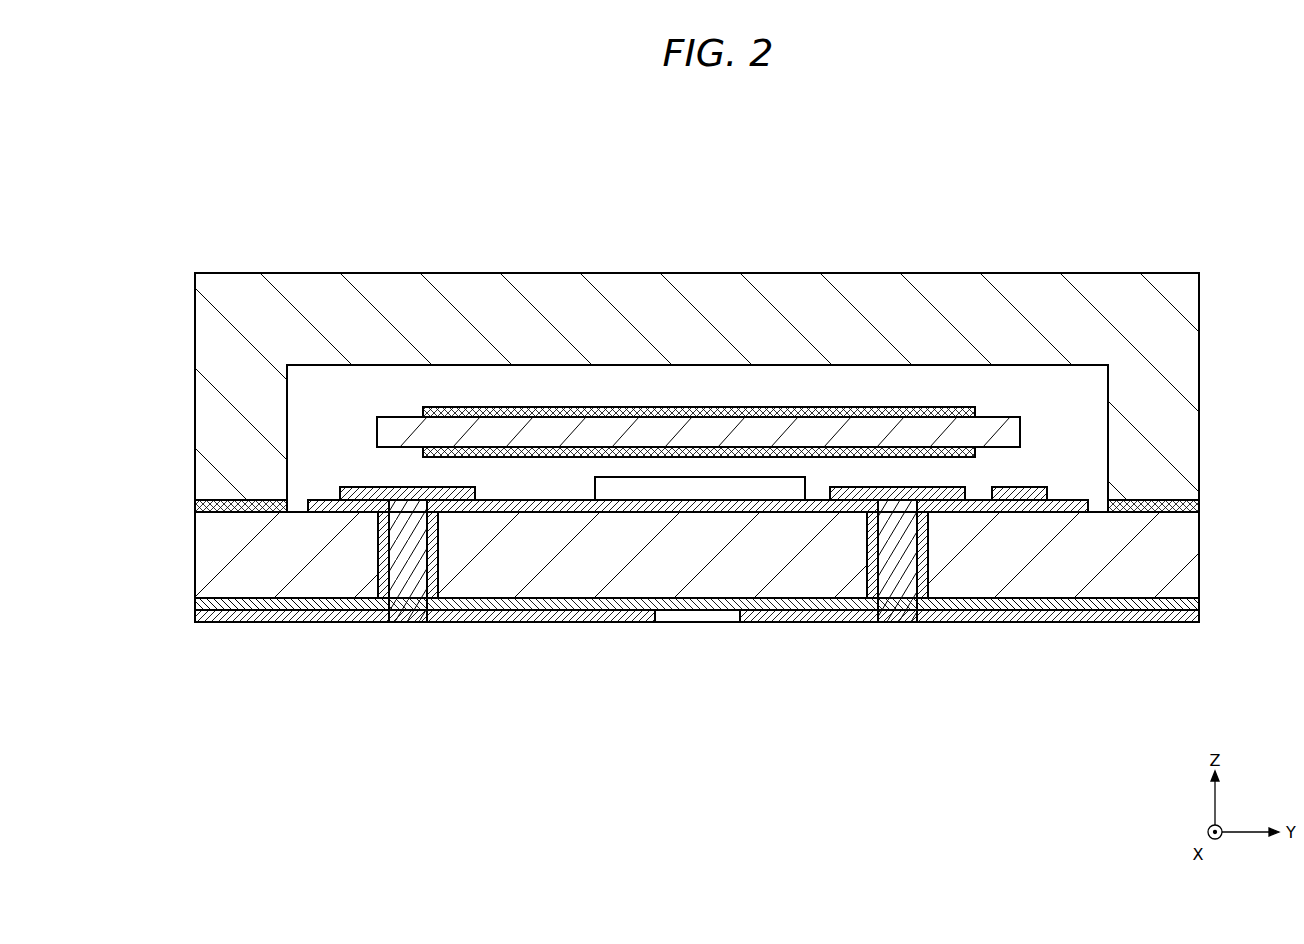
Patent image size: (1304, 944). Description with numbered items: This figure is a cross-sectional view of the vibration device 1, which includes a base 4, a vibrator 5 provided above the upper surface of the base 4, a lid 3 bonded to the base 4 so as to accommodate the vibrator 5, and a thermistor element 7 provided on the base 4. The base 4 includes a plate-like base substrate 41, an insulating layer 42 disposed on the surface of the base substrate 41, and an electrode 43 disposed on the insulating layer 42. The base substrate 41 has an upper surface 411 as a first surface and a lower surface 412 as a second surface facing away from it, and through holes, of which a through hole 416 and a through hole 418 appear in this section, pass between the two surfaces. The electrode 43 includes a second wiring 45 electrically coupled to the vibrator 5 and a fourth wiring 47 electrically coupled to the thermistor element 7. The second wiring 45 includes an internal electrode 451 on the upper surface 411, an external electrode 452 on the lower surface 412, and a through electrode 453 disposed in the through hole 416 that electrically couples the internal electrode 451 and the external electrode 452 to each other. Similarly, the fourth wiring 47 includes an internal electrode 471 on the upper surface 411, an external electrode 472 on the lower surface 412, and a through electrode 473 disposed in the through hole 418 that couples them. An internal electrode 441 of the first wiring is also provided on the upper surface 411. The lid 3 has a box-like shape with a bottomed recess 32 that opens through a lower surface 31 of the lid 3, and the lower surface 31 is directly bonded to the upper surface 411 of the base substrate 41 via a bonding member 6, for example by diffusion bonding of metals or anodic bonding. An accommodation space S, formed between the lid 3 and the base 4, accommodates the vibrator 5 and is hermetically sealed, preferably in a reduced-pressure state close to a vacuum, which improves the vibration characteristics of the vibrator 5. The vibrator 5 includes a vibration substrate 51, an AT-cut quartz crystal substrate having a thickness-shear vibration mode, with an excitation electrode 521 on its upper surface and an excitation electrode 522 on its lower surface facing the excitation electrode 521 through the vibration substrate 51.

The vibration device 1 is at (1203, 181).
The lid 3 is at (560, 313).
The lower surface 31 is at (245, 505).
The bottomed recess 32 is at (399, 369).
The accommodation space S is at (1073, 397).
The base 4 is at (188, 512).
The base substrate 41 is at (1123, 558).
The upper surface 411 is at (532, 500).
The lower surface 412 is at (615, 603).
The through hole 416 is at (438, 553).
The through hole 418 is at (930, 553).
The insulating layer 42 is at (695, 612).
The electrode 43 is at (697, 660).
The internal electrode 441 is at (1023, 490).
The second wiring 45 is at (548, 623).
The internal electrode 451 is at (360, 487).
The external electrode 452 is at (335, 605).
The through electrode 453 is at (407, 560).
The fourth wiring 47 is at (777, 623).
The internal electrode 471 is at (935, 487).
The external electrode 472 is at (1043, 613).
The through electrode 473 is at (897, 558).
The vibrator 5 is at (786, 407).
The vibration substrate 51 is at (880, 432).
The excitation electrode 521 is at (665, 457).
The excitation electrode 522 is at (618, 410).
The bonding member 6 is at (225, 500).
The thermistor element 7 is at (712, 490).